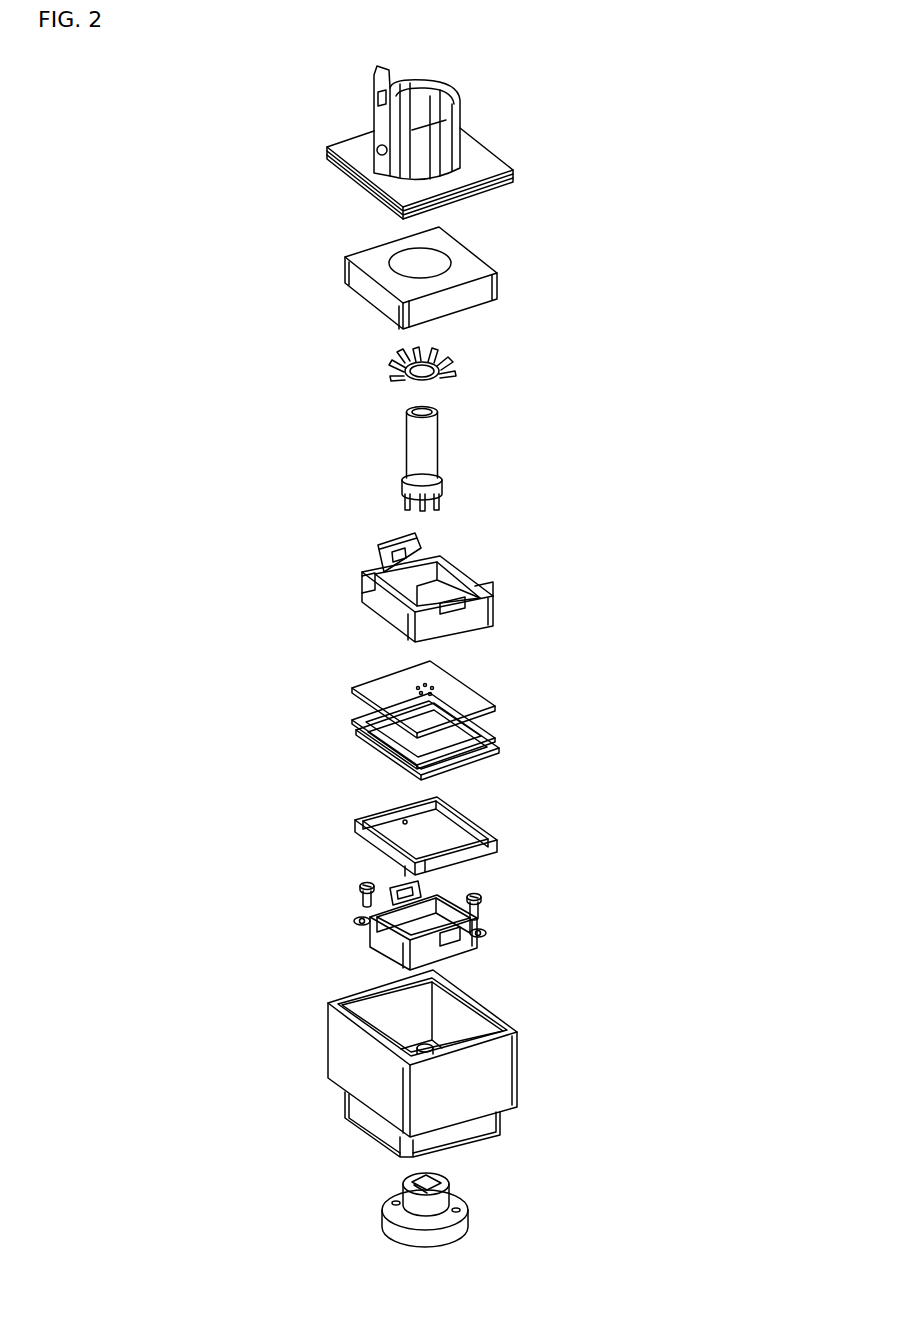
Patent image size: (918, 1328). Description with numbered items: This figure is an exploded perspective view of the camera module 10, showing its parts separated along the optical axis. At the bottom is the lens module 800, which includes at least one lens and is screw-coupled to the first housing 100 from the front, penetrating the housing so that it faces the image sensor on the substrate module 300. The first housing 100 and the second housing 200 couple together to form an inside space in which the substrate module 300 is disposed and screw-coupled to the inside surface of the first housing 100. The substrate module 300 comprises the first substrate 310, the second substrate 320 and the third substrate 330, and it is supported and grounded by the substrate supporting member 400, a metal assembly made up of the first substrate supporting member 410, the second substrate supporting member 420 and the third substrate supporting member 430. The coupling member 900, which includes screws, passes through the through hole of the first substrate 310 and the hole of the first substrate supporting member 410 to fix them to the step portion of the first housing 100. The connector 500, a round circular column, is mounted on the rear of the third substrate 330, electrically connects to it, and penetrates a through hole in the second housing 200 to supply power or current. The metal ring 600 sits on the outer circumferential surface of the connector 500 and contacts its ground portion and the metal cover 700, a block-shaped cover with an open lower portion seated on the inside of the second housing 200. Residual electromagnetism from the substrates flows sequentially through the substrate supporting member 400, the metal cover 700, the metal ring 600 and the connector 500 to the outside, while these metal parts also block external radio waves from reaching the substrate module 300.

The camera module 10 is at (226, 113).
The first housing 100 is at (518, 1063).
The second housing 200 is at (507, 168).
The substrate module 300 is at (270, 660).
The first substrate 310 is at (357, 740).
The second substrate 320 is at (357, 720).
The third substrate 330 is at (370, 700).
The substrate supporting member 400 is at (597, 726).
The first substrate supporting member 410 is at (467, 947).
The second substrate supporting member 420 is at (490, 848).
The third substrate supporting member 430 is at (490, 620).
The connector 500 is at (437, 452).
The metal ring 600 is at (458, 367).
The metal cover 700 is at (500, 280).
The lens module 800 is at (470, 1219).
The coupling member 900 is at (360, 898).